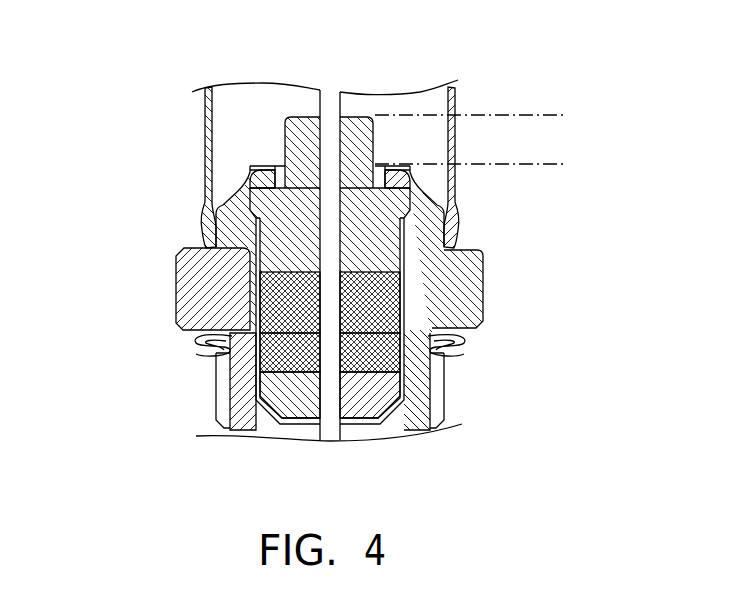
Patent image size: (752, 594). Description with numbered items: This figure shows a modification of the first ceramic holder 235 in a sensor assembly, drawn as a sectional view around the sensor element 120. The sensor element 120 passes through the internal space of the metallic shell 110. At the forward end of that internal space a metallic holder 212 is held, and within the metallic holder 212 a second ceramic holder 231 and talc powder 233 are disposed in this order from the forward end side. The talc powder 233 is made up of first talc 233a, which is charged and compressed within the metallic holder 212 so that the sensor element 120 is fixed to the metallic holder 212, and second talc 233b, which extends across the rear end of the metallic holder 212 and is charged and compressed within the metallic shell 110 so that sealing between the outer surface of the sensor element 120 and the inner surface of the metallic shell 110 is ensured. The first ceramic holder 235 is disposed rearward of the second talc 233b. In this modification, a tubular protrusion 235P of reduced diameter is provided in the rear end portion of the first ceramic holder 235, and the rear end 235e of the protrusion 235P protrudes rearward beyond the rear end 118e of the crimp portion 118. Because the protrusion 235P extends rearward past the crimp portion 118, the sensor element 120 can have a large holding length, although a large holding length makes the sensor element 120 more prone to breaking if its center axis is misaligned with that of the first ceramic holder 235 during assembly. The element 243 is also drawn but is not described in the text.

The metallic shell 110 is at (481, 317).
The crimp portion 118 is at (398, 168).
The rear end of the crimp portion 118e is at (497, 165).
The sensor element 120 is at (326, 132).
The metallic holder 212 is at (393, 388).
The second ceramic holder 231 is at (255, 406).
The talc powder 233 is at (211, 332).
The first talc 233a is at (260, 356).
The second talc 233b is at (260, 301).
The first ceramic holder 235 is at (205, 216).
The tubular protrusion 235P is at (255, 165).
The rear end of the protrusion 235e is at (497, 115).
The seal ring 243 is at (403, 178).